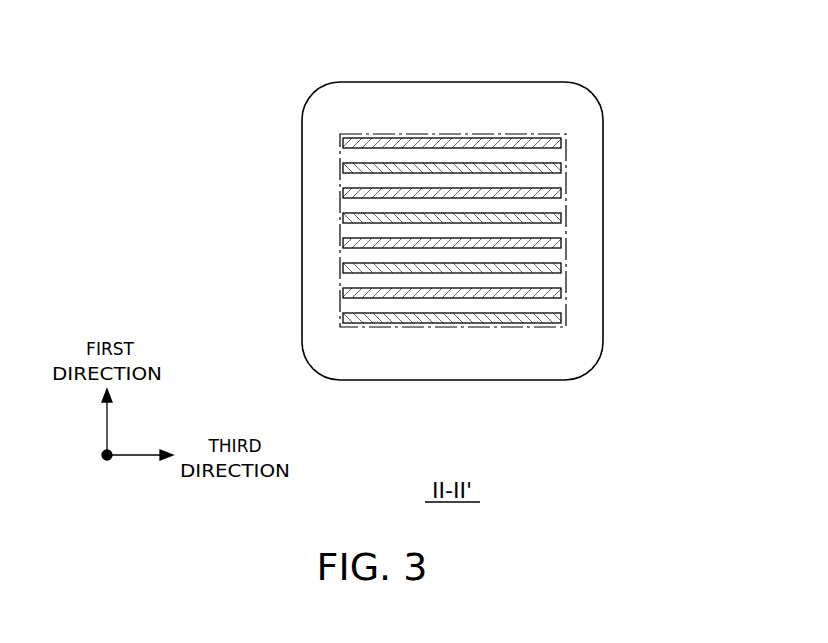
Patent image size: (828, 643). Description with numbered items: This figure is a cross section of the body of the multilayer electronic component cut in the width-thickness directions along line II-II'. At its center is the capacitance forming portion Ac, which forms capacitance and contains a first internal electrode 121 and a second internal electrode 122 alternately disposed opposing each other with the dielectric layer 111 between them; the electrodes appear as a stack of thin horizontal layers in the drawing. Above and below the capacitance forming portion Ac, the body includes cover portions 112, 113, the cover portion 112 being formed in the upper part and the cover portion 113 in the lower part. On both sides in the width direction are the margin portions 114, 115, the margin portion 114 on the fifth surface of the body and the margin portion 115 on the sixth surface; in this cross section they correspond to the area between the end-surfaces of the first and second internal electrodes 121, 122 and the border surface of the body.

The dielectric layer 111 is at (383, 150).
The cover portion 112 is at (419, 98).
The cover portion 113 is at (417, 363).
The margin portion 114 is at (316, 318).
The margin portion 115 is at (590, 233).
The first internal electrode 121 is at (485, 140).
The second internal electrode 122 is at (525, 217).
The capacitance forming portion Ac is at (585, 311).